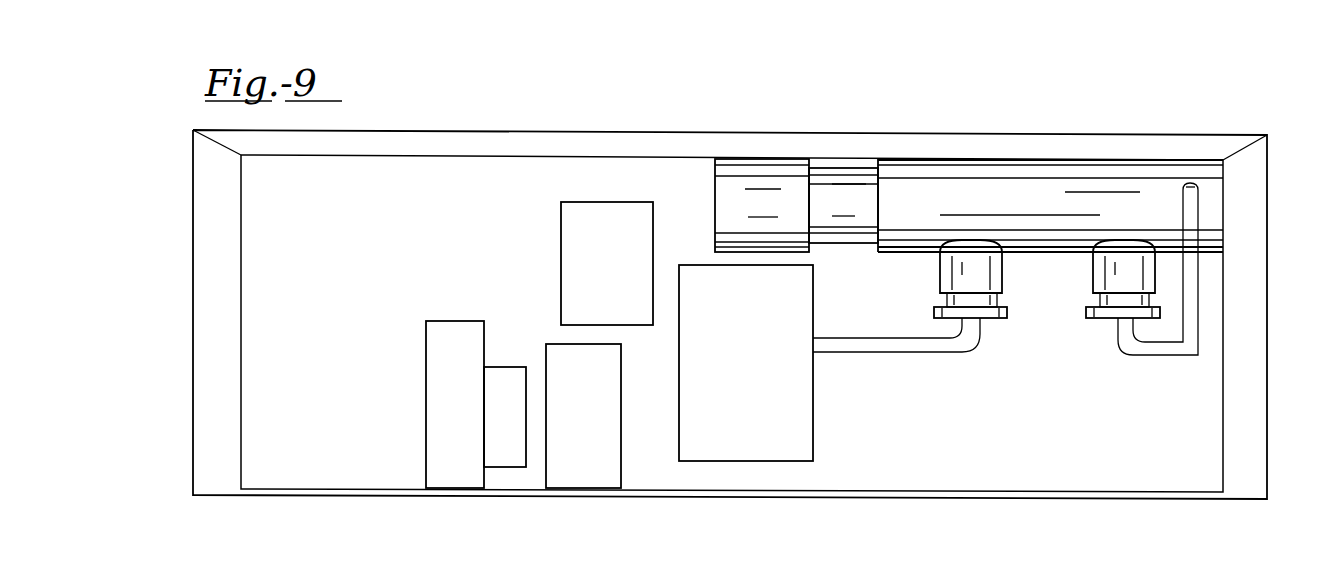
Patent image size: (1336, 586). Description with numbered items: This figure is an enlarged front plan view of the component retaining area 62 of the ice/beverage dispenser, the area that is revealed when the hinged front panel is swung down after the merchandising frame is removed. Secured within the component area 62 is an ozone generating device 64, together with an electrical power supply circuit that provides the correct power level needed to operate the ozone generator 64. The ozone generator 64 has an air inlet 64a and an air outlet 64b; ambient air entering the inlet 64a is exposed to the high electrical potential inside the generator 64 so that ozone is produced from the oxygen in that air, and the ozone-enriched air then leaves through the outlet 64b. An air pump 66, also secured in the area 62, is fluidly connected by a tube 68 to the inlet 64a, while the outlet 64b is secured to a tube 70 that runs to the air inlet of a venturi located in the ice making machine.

The component retaining area 62 is at (333, 465).
The ozone generating device 64 is at (992, 172).
The air inlet 64a is at (940, 262).
The air outlet 64b is at (1092, 270).
The air pump 66 is at (743, 448).
The tube 68 is at (870, 353).
The tube 70 is at (1137, 355).